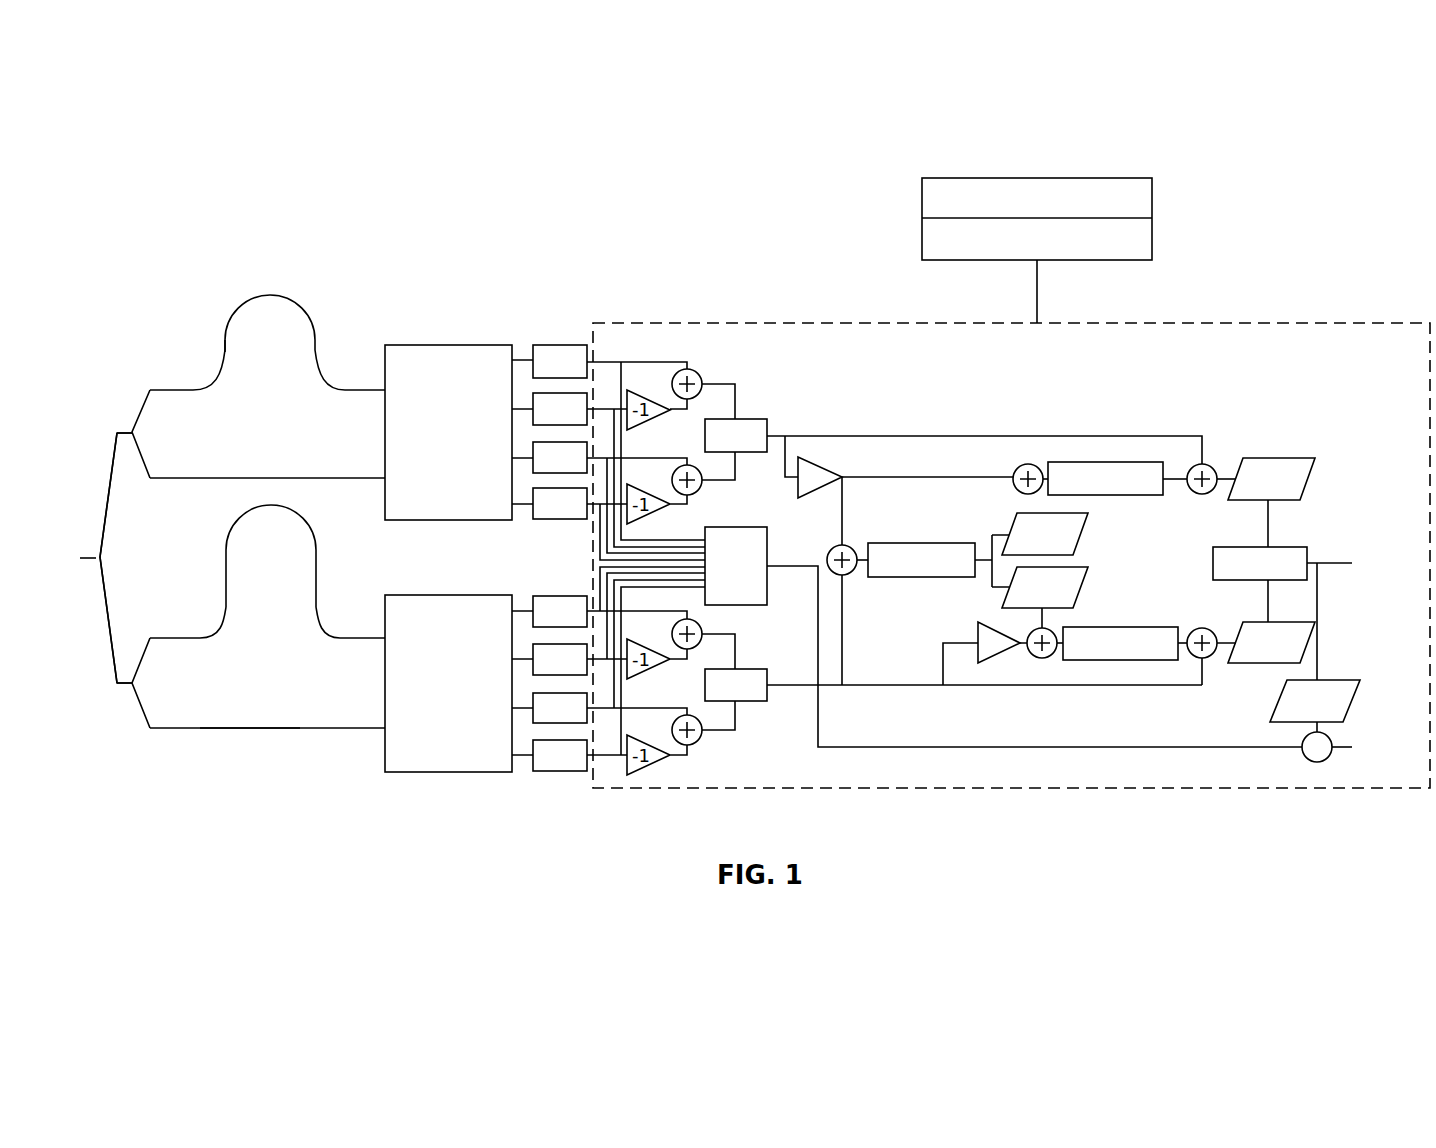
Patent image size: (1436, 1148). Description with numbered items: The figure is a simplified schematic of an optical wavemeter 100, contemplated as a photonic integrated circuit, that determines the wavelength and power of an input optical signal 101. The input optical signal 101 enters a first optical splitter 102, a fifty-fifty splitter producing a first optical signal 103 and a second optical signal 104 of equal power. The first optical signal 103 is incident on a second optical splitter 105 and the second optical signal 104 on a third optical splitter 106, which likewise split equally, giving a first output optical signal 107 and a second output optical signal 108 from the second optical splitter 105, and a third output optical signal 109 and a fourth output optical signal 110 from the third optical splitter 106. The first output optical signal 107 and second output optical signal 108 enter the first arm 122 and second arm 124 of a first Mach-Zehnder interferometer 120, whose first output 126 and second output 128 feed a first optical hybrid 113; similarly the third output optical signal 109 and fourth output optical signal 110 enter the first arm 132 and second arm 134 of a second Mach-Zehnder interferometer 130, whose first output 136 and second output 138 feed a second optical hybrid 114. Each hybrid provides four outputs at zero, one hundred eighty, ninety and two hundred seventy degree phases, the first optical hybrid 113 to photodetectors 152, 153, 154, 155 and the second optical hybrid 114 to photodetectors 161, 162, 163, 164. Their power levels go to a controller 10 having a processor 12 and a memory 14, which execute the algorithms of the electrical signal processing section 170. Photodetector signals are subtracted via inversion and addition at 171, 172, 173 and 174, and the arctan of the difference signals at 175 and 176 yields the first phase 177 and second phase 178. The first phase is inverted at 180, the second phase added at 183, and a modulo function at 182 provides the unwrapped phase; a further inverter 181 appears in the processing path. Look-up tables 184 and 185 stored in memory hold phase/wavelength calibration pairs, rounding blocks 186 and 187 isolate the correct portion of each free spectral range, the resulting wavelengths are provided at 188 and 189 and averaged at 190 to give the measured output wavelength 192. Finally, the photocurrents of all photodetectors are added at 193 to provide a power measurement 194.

The controller 10 is at (972, 178).
The processor 12 is at (1152, 190).
The memory 14 is at (1152, 233).
The optical wavemeter 100 is at (365, 201).
The input optical signal 101 is at (100, 557).
The first optical splitter 102 is at (100, 560).
The first optical signal 103 is at (110, 472).
The second optical signal 104 is at (108, 653).
The second optical splitter 105 is at (132, 432).
The third optical splitter 106 is at (132, 683).
The first output optical signal 107 is at (150, 397).
The second output optical signal 108 is at (145, 462).
The third output optical signal 109 is at (150, 642).
The fourth output optical signal 110 is at (145, 712).
The first optical hybrid 113 is at (428, 345).
The second optical hybrid 114 is at (435, 772).
The first Mach-Zehnder interferometer 120 is at (303, 312).
The first arm of the first MZI 122 is at (225, 355).
The second arm of the first MZI 124 is at (236, 478).
The first output of the first MZI 126 is at (340, 385).
The second output of the first MZI 128 is at (320, 478).
The second Mach-Zehnder interferometer 130 is at (252, 728).
The first arm of the second MZI 132 is at (225, 565).
The second arm of the second MZI 134 is at (218, 728).
The first output of the second MZI 136 is at (338, 635).
The second output of the second MZI 138 is at (355, 728).
The first photodetector 152 is at (545, 345).
The second photodetector 153 is at (527, 400).
The third photodetector 154 is at (533, 470).
The fourth photodetector 155 is at (580, 520).
The fifth photodetector 161 is at (546, 596).
The sixth photodetector 162 is at (533, 668).
The seventh photodetector 163 is at (588, 722).
The eighth photodetector 164 is at (578, 772).
The electrical signal processing section 170 is at (1300, 323).
The first subtraction block 171 is at (672, 362).
The second subtraction block 172 is at (720, 487).
The third subtraction block 173 is at (748, 640).
The fourth subtraction block 174 is at (740, 702).
The first phase determination block 175 is at (740, 419).
The second phase determination block 176 is at (748, 668).
The first phase 177 is at (795, 410).
The second phase 178 is at (805, 669).
The inversion block 180 is at (822, 470).
The inversion block 181 is at (990, 661).
The modulo function block 182 is at (885, 543).
The phase addition block 183 is at (835, 548).
The first look-up table 184 is at (1083, 533).
The second look-up table 185 is at (1083, 585).
The first rounding block 186 is at (1085, 462).
The second rounding block 187 is at (1113, 660).
The first wavelength output 188 is at (1268, 458).
The second wavelength output 189 is at (1253, 663).
The averaging block 190 is at (1300, 547).
The measured output wavelength 192 is at (1360, 555).
The summation block 193 is at (752, 527).
The power measurement 194 is at (1398, 730).